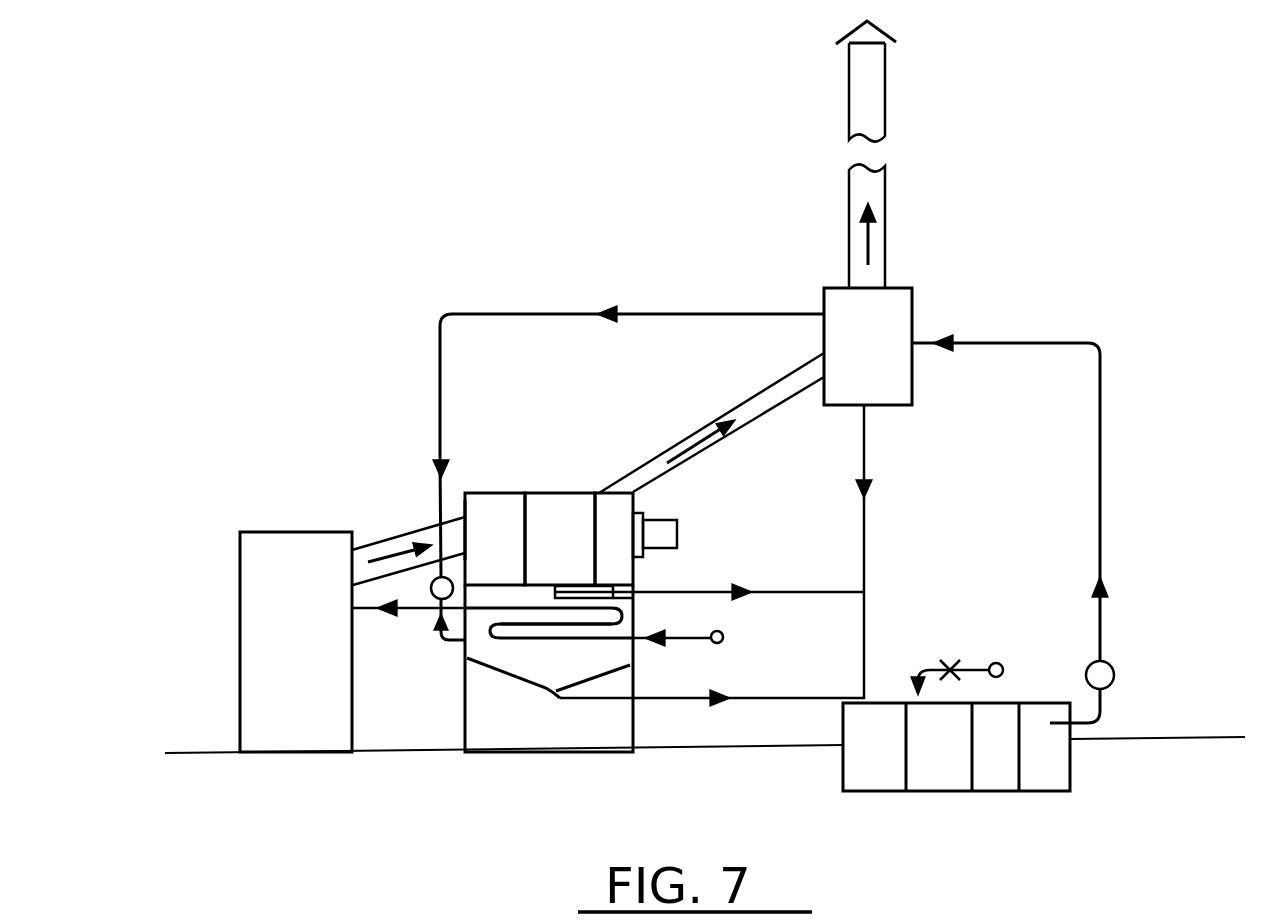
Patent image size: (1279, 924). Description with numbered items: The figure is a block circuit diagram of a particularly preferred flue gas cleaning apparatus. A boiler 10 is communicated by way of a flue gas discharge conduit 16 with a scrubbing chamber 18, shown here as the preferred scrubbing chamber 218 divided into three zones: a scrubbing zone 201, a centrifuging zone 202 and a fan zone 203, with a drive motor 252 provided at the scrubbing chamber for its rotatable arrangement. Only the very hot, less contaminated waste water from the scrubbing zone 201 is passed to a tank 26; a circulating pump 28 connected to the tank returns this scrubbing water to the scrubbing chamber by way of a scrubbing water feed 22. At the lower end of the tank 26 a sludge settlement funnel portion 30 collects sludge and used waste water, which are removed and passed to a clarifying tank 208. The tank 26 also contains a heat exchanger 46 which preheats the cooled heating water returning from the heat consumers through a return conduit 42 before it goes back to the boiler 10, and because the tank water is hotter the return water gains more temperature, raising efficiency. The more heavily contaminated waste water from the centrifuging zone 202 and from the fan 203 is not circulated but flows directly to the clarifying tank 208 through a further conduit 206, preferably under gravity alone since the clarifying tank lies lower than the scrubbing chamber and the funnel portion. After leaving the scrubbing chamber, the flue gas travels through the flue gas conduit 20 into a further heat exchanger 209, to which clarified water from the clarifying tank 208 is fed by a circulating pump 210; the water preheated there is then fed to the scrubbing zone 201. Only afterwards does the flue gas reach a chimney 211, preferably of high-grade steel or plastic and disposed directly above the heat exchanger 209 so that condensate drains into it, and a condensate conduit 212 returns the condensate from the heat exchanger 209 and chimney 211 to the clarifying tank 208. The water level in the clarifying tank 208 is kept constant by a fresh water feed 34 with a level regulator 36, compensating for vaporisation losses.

The boiler 10 is at (298, 563).
The flue gas discharge conduit 16 is at (382, 543).
The scrubbing chamber 18 is at (462, 510).
The flue gas conduit 20 is at (775, 397).
The scrubbing water feed 22 is at (558, 312).
The tank 26 is at (633, 613).
The circulating pump 28 is at (435, 599).
The sludge settlement funnel portion 30 is at (543, 663).
The fresh water feed 34 is at (1004, 665).
The level regulator 36 is at (945, 658).
The return conduit 42 is at (723, 640).
The heat exchanger 46 is at (562, 625).
The scrubbing zone 201 is at (505, 525).
The centrifuging zone 202 is at (553, 523).
The fan zone 203 is at (612, 523).
The further conduit 206 is at (690, 592).
The clarifying tank 208 is at (930, 765).
The heat exchanger 209 is at (875, 322).
The circulating pump 210 is at (1115, 670).
The chimney 211 is at (870, 108).
The condensate conduit 212 is at (868, 524).
The scrubbing chamber 218 is at (487, 498).
The drive motor 252 is at (665, 517).